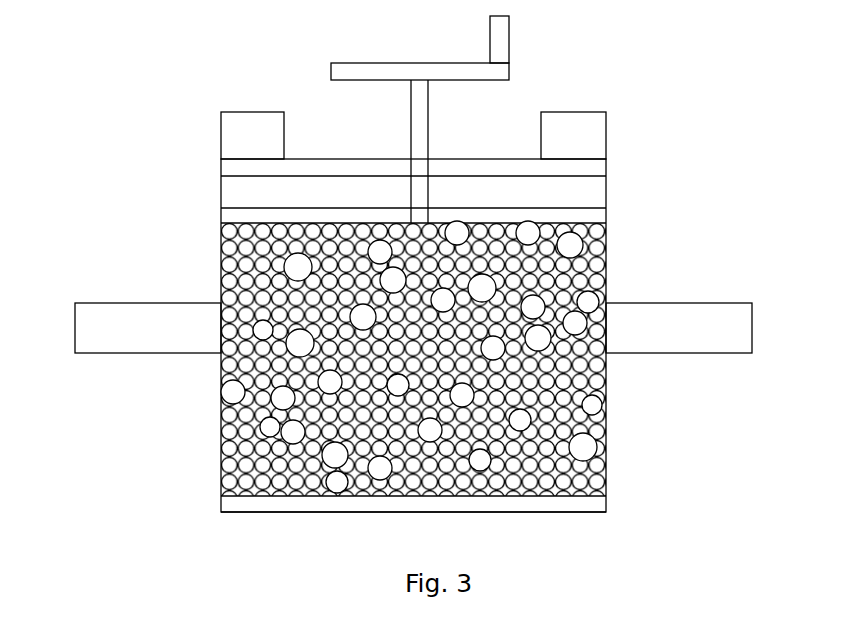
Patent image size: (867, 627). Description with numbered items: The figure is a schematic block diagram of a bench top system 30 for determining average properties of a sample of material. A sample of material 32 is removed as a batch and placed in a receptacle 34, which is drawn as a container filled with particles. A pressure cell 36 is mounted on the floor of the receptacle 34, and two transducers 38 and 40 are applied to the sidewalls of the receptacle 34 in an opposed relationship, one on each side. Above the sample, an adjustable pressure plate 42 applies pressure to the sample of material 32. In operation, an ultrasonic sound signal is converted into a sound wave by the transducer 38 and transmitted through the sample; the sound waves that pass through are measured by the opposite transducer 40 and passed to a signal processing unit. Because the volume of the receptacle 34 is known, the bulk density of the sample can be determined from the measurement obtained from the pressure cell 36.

The bench top system 30 is at (652, 96).
The sample of material 32 is at (577, 413).
The receptacle 34 is at (608, 463).
The pressure cell 36 is at (220, 511).
The transducer 38 is at (655, 303).
The transducer 40 is at (105, 303).
The adjustable pressure plate 42 is at (592, 208).